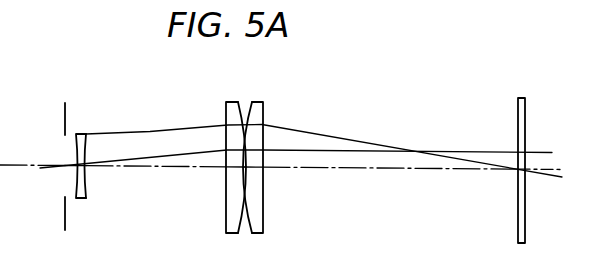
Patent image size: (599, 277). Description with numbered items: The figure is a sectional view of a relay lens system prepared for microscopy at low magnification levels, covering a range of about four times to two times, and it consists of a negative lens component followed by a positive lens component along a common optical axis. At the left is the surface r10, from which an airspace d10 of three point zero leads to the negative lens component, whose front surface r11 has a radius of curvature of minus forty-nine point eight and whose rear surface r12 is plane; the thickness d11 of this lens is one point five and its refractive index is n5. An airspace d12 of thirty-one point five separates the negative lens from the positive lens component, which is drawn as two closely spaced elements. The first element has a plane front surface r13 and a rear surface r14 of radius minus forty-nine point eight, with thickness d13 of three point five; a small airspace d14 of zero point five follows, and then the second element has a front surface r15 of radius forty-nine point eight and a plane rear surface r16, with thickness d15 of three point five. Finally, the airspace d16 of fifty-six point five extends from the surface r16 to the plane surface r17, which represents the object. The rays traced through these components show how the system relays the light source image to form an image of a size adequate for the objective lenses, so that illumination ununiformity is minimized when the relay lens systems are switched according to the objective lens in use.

The airspace d10 is at (70, 166).
The lens thickness d11 is at (80, 163).
The airspace d12 is at (161, 167).
The lens thickness d13 is at (228, 163).
The airspace d14 is at (246, 163).
The lens thickness d15 is at (260, 163).
The airspace d16 is at (369, 168).
The surface r10 is at (65, 217).
The lens surface r11 is at (79, 198).
The lens surface r12 is at (84, 198).
The lens surface r13 is at (226, 215).
The lens surface r14 is at (237, 233).
The lens surface r15 is at (254, 233).
The lens surface r16 is at (264, 218).
The object plane r17 is at (518, 223).